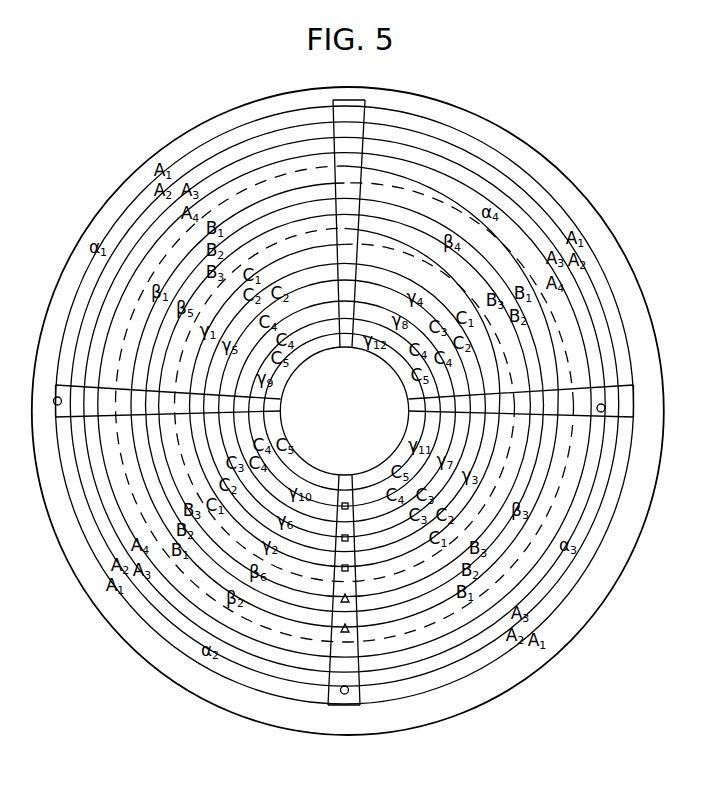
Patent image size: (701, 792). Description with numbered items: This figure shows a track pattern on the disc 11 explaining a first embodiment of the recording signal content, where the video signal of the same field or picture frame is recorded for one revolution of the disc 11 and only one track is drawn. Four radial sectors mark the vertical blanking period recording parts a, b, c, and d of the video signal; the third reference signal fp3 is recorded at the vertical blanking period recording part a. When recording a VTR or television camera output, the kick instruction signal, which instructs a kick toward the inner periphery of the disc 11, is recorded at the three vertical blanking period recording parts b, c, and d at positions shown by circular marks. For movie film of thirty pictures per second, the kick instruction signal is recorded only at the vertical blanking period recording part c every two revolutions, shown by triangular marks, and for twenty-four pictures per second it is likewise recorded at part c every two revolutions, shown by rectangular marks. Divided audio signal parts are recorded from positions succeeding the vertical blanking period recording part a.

The disc 11 is at (496, 120).
The vertical blanking period recording part a is at (333, 97).
The vertical blanking period recording part b is at (50, 385).
The vertical blanking period recording part c is at (328, 710).
The vertical blanking period recording part d is at (638, 385).